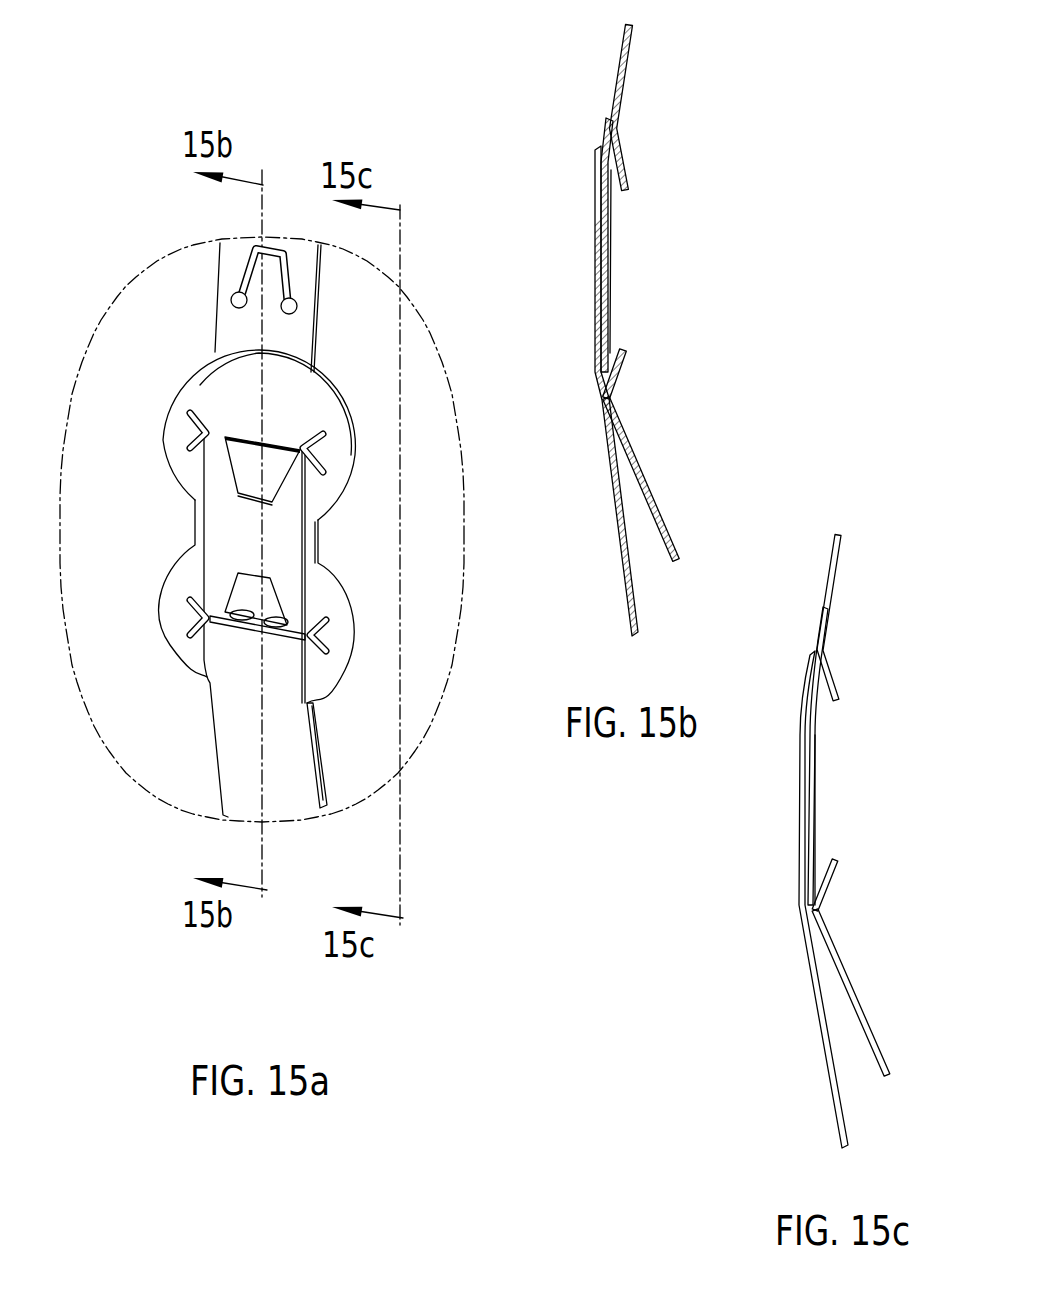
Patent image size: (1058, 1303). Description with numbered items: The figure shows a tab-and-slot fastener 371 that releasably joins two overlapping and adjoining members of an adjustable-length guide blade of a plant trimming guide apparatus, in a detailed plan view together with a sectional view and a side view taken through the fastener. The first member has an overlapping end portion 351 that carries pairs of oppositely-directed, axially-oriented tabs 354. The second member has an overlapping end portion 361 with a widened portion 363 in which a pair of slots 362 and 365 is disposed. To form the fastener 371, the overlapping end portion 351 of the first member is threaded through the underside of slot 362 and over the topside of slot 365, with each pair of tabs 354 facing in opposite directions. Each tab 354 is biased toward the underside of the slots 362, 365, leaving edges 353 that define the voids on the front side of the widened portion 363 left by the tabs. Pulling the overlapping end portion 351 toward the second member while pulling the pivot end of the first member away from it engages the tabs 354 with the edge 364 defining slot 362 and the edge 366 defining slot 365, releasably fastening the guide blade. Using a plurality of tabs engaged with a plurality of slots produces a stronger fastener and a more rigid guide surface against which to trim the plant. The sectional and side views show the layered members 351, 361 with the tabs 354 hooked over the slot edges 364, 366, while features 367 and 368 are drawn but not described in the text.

In FIG. 15A, the overlapping end portion 351 is at (272, 537).
In FIG. 15B, the overlapping end portion 351 is at (652, 496).
In FIG. 15C, the overlapping end portion 351 is at (862, 1012).
In FIG. 15A, the edges 353 is at (270, 287).
In FIG. 15B, the tabs 354 is at (628, 170).
In FIG. 15C, the tabs 354 is at (835, 682).
In FIG. 15A, the overlapping end portion 361 is at (277, 677).
In FIG. 15B, the overlapping end portion 361 is at (605, 477).
In FIG. 15C, the overlapping end portion 361 is at (823, 899).
In FIG. 15A, the slot 362 is at (168, 420).
In FIG. 15B, the slot 362 is at (574, 135).
In FIG. 15C, the slot 362 is at (784, 650).
In FIG. 15A, the widened portion 363 is at (330, 640).
In FIG. 15B, the edge 364 is at (613, 187).
In FIG. 15C, the edge 364 is at (820, 700).
In FIG. 15A, the slot 365 is at (166, 610).
In FIG. 15B, the slot 365 is at (574, 395).
In FIG. 15C, the slot 365 is at (784, 909).
In FIG. 15B, the edge 366 is at (612, 353).
In FIG. 15C, the edge 366 is at (823, 855).
In FIG. 15A, the retaining member 367 is at (312, 460).
In FIG. 15A, the hook 368 is at (246, 430).
In FIG. 15A, the fastener 371 is at (381, 387).
In FIG. 15B, the fastener 371 is at (692, 311).
In FIG. 15C, the fastener 371 is at (735, 832).